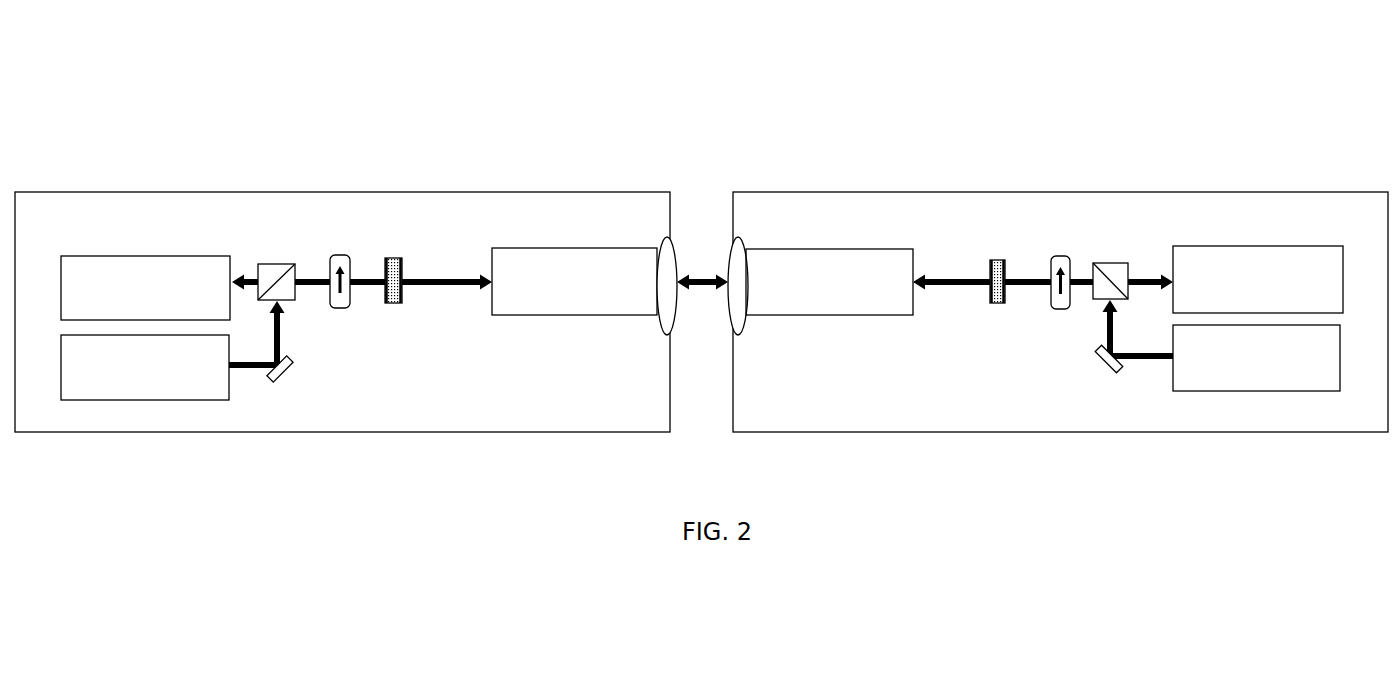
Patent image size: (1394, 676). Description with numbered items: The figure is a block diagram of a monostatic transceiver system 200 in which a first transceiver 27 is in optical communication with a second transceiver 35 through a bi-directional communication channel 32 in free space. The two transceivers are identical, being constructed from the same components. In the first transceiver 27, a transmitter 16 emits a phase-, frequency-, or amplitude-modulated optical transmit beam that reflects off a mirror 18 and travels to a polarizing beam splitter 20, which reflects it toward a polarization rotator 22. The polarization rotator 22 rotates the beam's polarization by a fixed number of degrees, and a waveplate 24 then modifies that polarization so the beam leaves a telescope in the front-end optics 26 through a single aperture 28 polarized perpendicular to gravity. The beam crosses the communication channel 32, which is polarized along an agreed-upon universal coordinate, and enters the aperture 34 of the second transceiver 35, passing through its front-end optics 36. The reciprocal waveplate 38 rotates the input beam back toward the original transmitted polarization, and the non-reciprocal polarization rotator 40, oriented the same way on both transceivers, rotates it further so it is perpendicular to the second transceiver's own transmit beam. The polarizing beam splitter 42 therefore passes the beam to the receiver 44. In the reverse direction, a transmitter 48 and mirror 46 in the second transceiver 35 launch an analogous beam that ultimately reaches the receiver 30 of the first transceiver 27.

The transceiver system 200 is at (173, 77).
The first transceiver 27 is at (342, 312).
The transmitter 16 is at (230, 390).
The mirror 18 is at (290, 373).
The polarizing beam splitter 20 is at (277, 263).
The polarization rotator 22 is at (340, 254).
The waveplate 24 is at (403, 300).
The front-end optics 26 is at (543, 247).
The single aperture 28 is at (663, 240).
The receiver 30 is at (80, 254).
The bi-directional communication channel 32 is at (702, 270).
The second transceiver 35 is at (1060, 312).
The aperture 34 is at (745, 247).
The front-end optics 36 is at (903, 248).
The waveplate 38 is at (990, 260).
The polarization rotator 40 is at (1053, 255).
The polarizing beam splitter 42 is at (1110, 263).
The receiver 44 is at (1345, 257).
The mirror 46 is at (1110, 370).
The transmitter 48 is at (1342, 380).